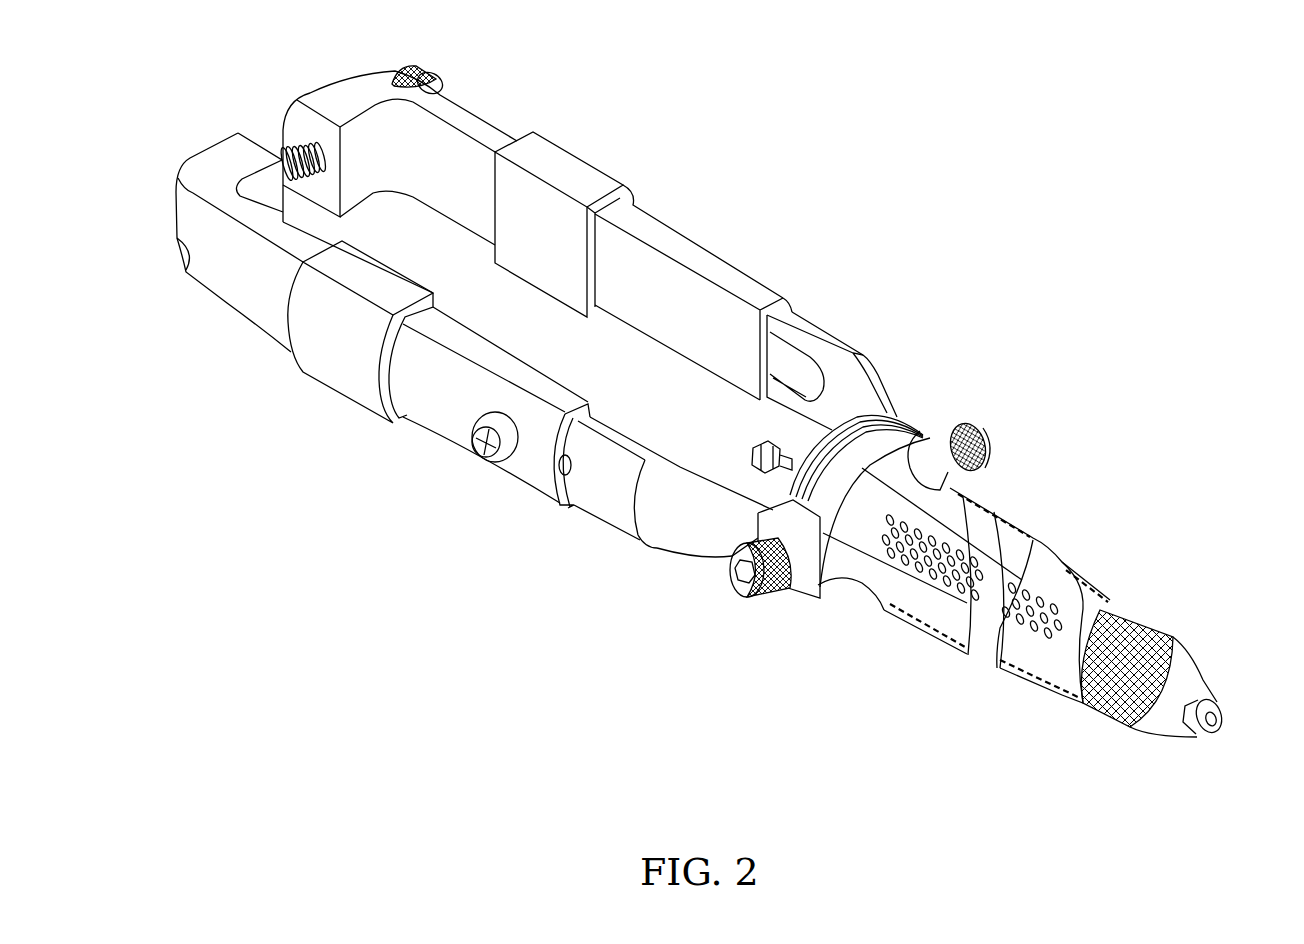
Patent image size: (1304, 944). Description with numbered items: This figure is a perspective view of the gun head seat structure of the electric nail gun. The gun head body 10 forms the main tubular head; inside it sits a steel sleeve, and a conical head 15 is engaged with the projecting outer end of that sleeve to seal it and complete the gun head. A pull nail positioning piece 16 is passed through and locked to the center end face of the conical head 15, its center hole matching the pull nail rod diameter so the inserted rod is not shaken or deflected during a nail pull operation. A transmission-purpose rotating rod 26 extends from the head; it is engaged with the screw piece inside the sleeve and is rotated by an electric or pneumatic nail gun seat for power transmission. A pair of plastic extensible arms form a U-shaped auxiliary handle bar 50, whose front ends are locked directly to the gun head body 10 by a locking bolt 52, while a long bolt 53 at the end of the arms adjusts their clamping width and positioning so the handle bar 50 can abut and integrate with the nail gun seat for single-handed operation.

The gun head body 10 is at (1047, 598).
The conical head 15 is at (1158, 628).
The pull nail positioning piece 16 is at (1213, 697).
The rotating rod 26 is at (752, 452).
The auxiliary handle bar 50 is at (724, 220).
The locking bolt 52 is at (743, 590).
The long bolt 53 is at (290, 148).